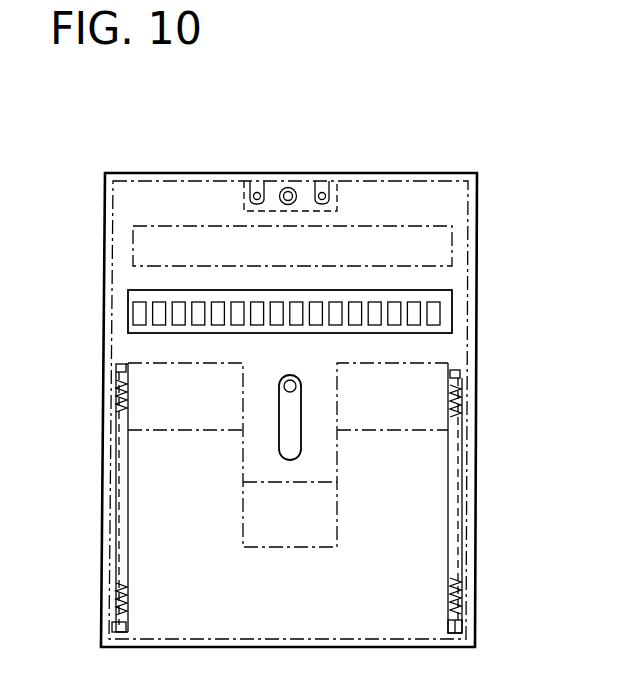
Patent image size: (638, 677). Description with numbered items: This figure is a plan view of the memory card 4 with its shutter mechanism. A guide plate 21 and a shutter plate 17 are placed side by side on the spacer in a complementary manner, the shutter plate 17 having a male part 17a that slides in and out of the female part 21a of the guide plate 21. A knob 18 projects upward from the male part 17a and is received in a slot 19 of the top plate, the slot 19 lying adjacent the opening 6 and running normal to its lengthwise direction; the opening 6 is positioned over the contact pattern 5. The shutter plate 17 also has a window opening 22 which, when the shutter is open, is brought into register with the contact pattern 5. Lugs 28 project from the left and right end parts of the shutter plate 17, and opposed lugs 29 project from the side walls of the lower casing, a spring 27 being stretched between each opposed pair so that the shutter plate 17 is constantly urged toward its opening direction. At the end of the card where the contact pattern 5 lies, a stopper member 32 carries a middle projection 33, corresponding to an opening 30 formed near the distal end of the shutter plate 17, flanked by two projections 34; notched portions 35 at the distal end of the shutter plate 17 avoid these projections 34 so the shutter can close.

The memory card 4 is at (116, 166).
The shutter plate 17 is at (458, 196).
The male part 17a is at (265, 471).
The stopper member 32 is at (300, 153).
The projection 33 is at (287, 188).
The opening 30 is at (296, 194).
The projections 34 is at (257, 190).
The notched portions 35 is at (330, 200).
The window opening 22 is at (450, 240).
The opening 6 is at (328, 318).
The contact pattern 5 is at (440, 313).
The knob 18 is at (287, 382).
The slot 19 is at (290, 440).
The guide plate 21 is at (448, 440).
The female part 21a is at (333, 463).
The spring 27 is at (458, 400).
The lugs 28 is at (118, 367).
The lugs 29 is at (118, 628).